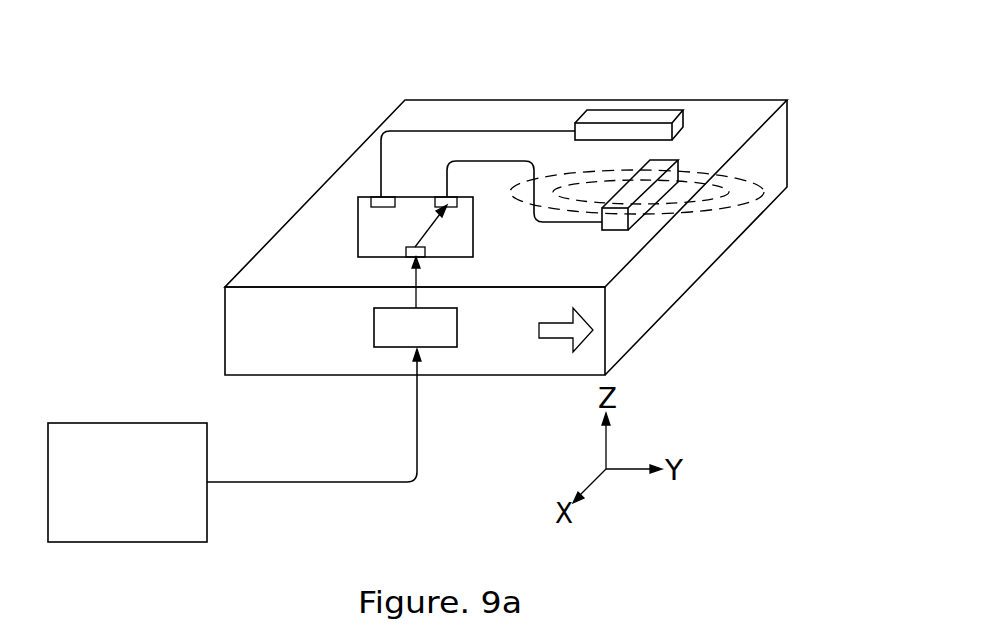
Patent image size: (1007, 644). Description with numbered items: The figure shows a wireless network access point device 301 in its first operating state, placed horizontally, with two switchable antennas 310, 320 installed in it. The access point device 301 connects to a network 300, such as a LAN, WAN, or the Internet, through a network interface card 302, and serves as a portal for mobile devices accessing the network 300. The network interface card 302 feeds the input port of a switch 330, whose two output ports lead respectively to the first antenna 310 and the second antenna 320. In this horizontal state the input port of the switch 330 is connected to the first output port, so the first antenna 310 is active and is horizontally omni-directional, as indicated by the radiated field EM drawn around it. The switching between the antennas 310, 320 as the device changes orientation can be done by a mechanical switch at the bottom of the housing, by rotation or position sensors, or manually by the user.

The network 300 is at (150, 387).
The wireless network access point device 301 is at (384, 120).
The network interface card 302 is at (457, 325).
The first antenna 310 is at (650, 240).
The second antenna 320 is at (608, 110).
The switch 330 is at (358, 233).
The electromagnetic wave EM is at (738, 181).